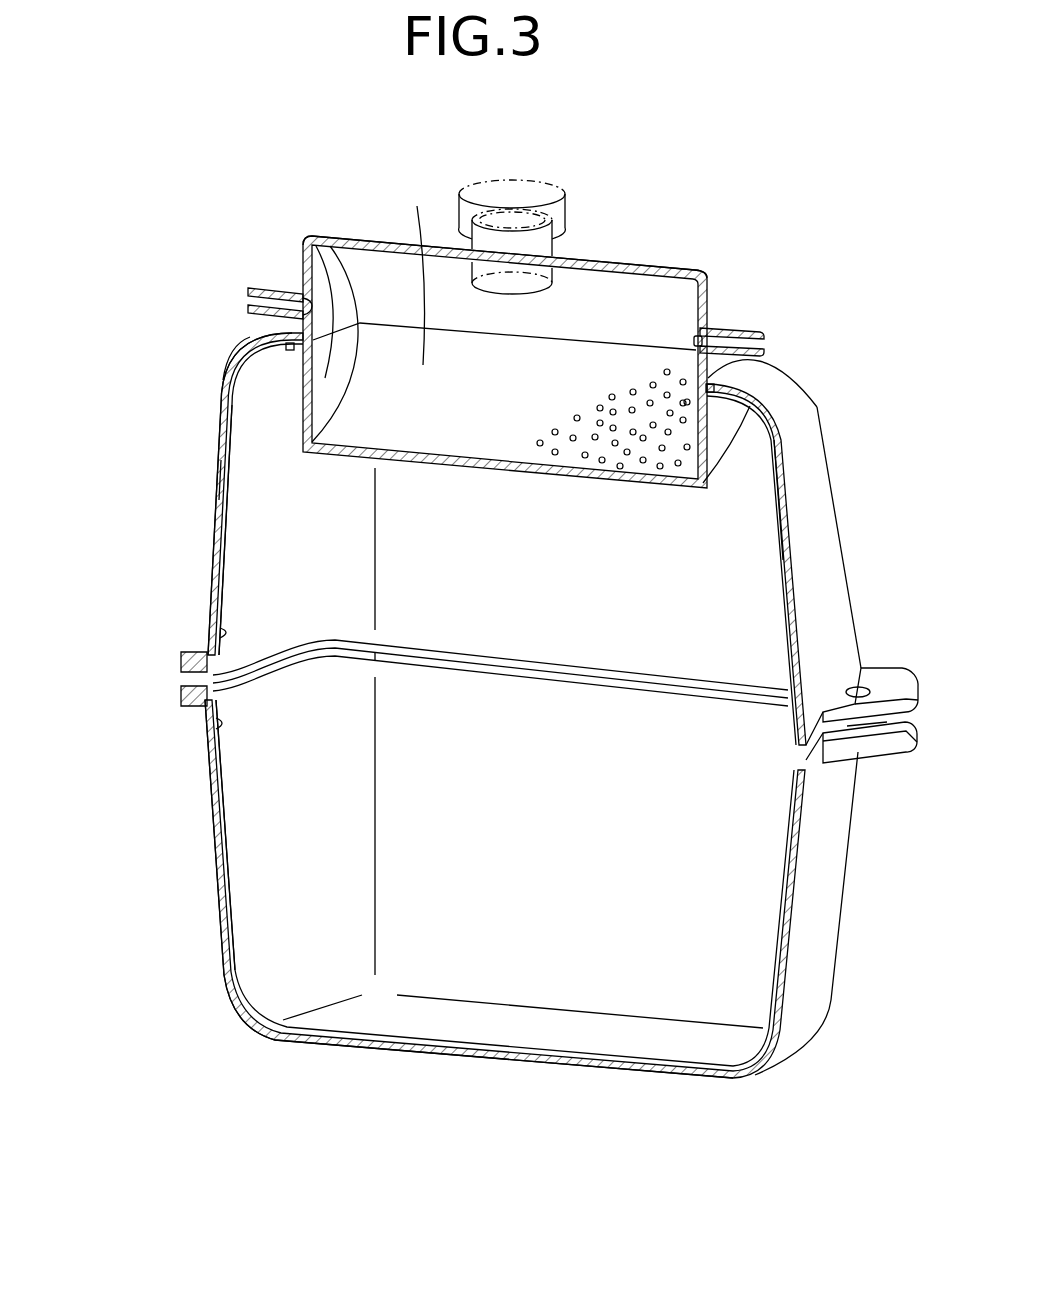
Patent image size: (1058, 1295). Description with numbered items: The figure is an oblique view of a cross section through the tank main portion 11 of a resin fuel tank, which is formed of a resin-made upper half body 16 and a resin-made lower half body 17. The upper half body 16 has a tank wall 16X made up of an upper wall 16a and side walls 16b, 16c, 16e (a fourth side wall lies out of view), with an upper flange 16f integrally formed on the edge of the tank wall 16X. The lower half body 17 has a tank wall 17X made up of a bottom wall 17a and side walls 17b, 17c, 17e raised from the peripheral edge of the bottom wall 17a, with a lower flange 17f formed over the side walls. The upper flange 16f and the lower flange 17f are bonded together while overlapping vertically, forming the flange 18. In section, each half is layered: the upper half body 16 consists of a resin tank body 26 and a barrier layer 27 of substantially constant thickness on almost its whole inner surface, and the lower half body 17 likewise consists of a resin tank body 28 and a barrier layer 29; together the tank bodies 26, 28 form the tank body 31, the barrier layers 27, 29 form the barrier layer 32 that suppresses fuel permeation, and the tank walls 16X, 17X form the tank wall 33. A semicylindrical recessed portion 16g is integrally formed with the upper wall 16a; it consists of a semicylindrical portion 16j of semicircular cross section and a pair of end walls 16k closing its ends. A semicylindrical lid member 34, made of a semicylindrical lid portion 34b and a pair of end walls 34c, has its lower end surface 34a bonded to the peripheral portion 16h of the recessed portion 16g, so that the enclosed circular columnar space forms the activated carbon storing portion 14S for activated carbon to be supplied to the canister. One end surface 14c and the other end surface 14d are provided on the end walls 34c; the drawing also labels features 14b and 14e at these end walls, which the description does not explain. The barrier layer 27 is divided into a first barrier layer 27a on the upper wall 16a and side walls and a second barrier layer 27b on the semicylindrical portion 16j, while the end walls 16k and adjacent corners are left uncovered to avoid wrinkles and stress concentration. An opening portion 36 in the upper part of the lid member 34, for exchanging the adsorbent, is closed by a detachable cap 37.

The tank main portion 11 is at (198, 336).
The activated carbon storing portion 14S is at (641, 232).
The pipe 14b is at (740, 335).
The one end surface 14c is at (743, 330).
The other end surface 14d is at (300, 293).
The pipe 14e is at (268, 287).
The upper half body 16 is at (219, 494).
The tank wall 16X is at (160, 518).
The upper wall 16a is at (768, 374).
The side wall 16b is at (818, 527).
The side wall 16c is at (218, 545).
The side wall 16e is at (423, 527).
The upper flange 16f is at (897, 697).
The recessed portion 16g is at (822, 489).
The peripheral portion 16h is at (818, 398).
The semicylindrical portion 16j is at (418, 271).
The end walls 16k is at (320, 272).
The lower half body 17 is at (462, 889).
The tank wall 17X is at (162, 790).
The bottom wall 17a is at (492, 1070).
The side wall 17b is at (820, 952).
The side wall 17c is at (222, 888).
The side wall 17e is at (423, 827).
The lower flange 17f is at (900, 730).
The flange 18 is at (853, 662).
The tank body 26 is at (223, 407).
The barrier layer 27 is at (430, 589).
The first barrier layer 27a is at (221, 634).
The second barrier layer 27b is at (488, 473).
The tank body 28 is at (225, 993).
The barrier layer 29 is at (147, 707).
The tank body 31 is at (184, 359).
The barrier layer 32 is at (407, 601).
The tank wall 33 is at (166, 466).
The lid member 34 is at (505, 318).
The lower end surface 34a is at (688, 393).
The semicylindrical lid portion 34b is at (590, 254).
The end walls 34c is at (508, 244).
The opening portion 36 is at (495, 184).
The cap 37 is at (548, 184).